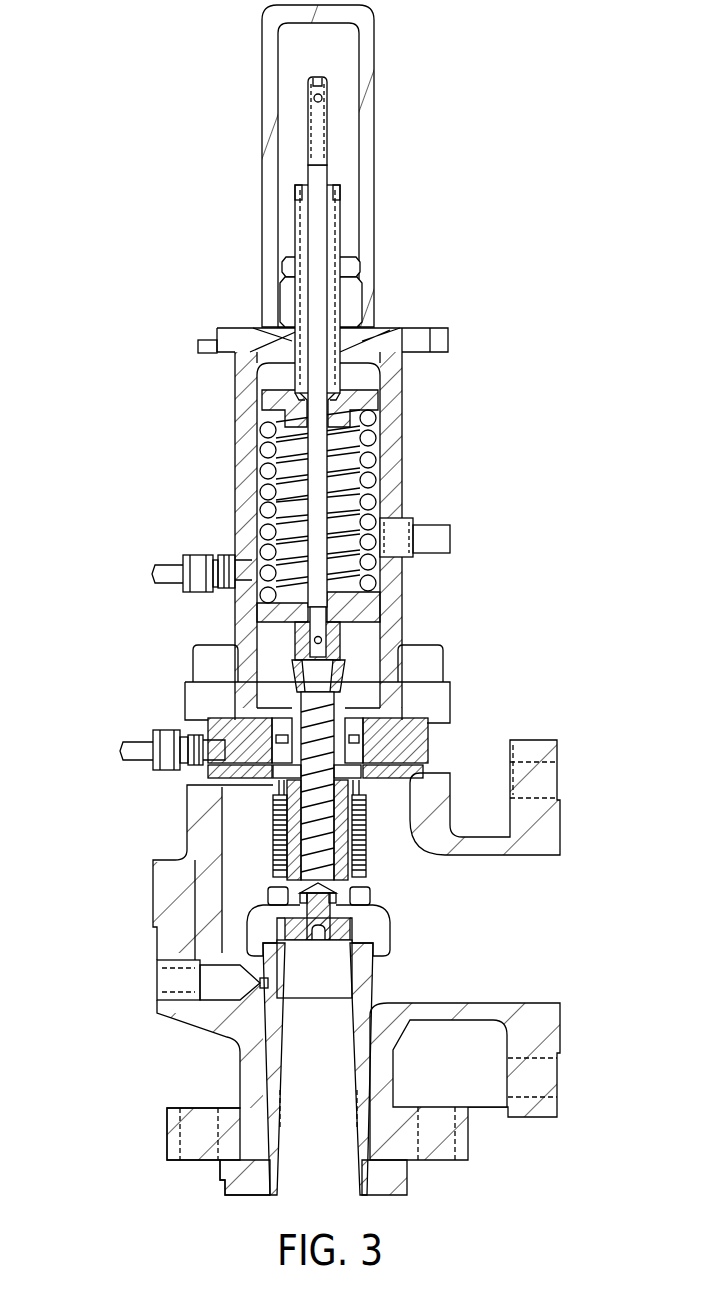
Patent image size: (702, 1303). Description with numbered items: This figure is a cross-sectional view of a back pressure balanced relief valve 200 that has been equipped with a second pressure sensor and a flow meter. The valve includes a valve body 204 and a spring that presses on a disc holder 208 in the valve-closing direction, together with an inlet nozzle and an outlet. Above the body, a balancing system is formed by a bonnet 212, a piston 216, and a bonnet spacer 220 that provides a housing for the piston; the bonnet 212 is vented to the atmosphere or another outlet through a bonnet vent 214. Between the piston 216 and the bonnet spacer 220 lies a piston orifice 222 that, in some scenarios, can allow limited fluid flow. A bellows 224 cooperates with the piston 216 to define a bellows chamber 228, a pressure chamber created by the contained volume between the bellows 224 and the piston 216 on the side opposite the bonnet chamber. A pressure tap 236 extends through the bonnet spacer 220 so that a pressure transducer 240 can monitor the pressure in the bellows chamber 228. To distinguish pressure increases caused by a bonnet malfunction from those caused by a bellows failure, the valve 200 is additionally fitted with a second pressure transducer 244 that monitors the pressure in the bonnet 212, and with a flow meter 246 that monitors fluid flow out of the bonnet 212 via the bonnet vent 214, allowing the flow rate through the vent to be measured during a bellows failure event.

The back pressure balanced relief valve 200 is at (157, 118).
The valve body 204 is at (237, 512).
The disc holder 208 is at (325, 818).
The bonnet 212 is at (402, 418).
The bonnet vent 214 is at (403, 525).
The piston 216 is at (357, 738).
The bonnet spacer 220 is at (277, 740).
The piston orifice 222 is at (243, 747).
The bellows 224 is at (273, 835).
The bellows chamber 228 is at (283, 873).
The pressure tap 236 is at (222, 745).
The pressure transducer 240 is at (123, 743).
The second pressure transducer 244 is at (197, 553).
The flow meter 246 is at (452, 543).